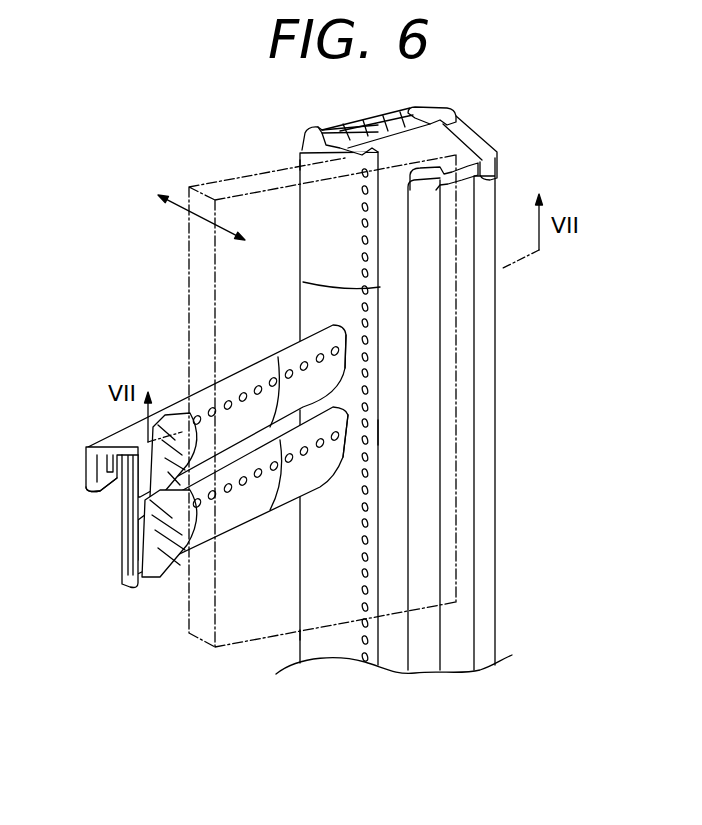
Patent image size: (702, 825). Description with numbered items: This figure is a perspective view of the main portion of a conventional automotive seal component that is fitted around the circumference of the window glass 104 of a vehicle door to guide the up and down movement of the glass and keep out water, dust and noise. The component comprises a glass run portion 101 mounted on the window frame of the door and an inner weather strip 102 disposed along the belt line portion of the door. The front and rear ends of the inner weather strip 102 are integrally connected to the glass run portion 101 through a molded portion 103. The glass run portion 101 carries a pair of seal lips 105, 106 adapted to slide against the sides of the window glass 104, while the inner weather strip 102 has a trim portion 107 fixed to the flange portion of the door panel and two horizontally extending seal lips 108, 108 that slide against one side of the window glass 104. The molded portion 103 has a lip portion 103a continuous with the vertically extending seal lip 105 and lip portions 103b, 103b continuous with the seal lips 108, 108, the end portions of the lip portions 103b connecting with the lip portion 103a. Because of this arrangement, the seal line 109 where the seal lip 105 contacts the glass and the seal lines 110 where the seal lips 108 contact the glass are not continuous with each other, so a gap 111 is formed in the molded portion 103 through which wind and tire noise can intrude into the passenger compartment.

The glass run portion 101 is at (505, 172).
The inner weather strip 102 is at (96, 428).
The molded portion 103 is at (290, 291).
The lip portion 103a is at (367, 433).
The lip portion 103b is at (367, 342).
The window glass 104 is at (210, 182).
The seal lip 105 is at (300, 160).
The seal lip 106 is at (430, 210).
The trim portion 107 is at (85, 478).
The seal lip 108 is at (200, 405).
The seal line 109 is at (367, 310).
The seal line 110 is at (260, 383).
The gap 111 is at (355, 373).